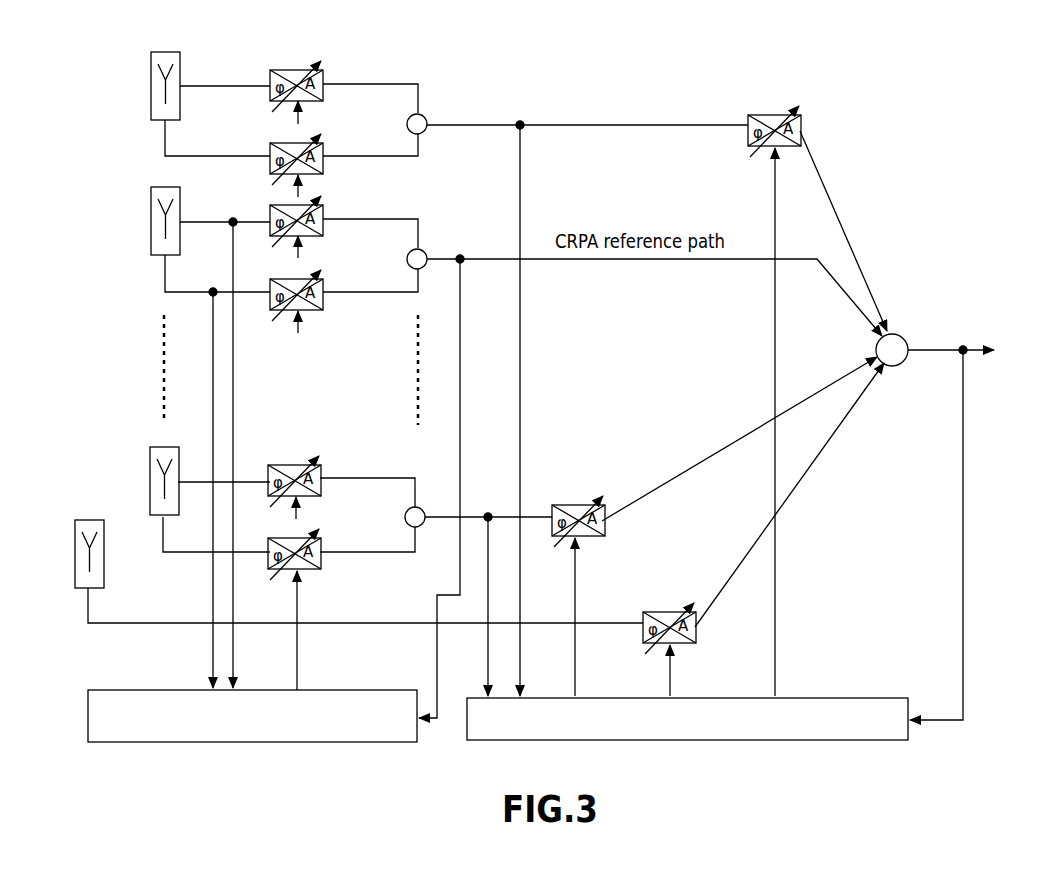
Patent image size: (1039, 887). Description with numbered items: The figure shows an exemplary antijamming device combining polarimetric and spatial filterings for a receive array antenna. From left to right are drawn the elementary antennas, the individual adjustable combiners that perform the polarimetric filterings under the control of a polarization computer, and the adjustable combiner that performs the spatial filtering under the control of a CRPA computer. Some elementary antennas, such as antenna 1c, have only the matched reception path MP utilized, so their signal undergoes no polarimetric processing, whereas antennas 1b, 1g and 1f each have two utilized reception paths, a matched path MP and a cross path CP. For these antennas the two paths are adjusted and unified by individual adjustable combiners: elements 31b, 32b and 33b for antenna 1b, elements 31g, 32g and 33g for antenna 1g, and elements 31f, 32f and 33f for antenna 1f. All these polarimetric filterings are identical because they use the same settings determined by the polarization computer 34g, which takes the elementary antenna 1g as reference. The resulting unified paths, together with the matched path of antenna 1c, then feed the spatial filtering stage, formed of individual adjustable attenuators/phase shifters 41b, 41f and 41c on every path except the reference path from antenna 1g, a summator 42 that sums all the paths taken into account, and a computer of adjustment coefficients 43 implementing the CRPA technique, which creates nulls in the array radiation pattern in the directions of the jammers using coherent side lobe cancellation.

The elementary antenna 1b is at (151, 80).
The elementary antenna 1g is at (151, 222).
The elementary antenna 1f is at (150, 454).
The elementary antenna 1c is at (92, 520).
The individual adjustable combiner 31b is at (288, 70).
The individual adjustable combiner 32b is at (324, 150).
The individual adjustable combiner 31g is at (270, 214).
The individual adjustable combiner 32g is at (324, 288).
The individual adjustable combiner 31f is at (286, 465).
The individual adjustable combiner 32f is at (322, 547).
The individual adjustable combiner 33b is at (425, 117).
The individual adjustable combiner 33g is at (425, 252).
The individual adjustable combiner 33f is at (421, 507).
The polarization computer 34g is at (320, 690).
The individual adjustable attenuator/phase shifter 41b is at (753, 115).
The individual adjustable attenuator/phase shifter 41f is at (560, 505).
The individual adjustable attenuator/phase shifter 41c is at (655, 612).
The summator 42 is at (903, 340).
The computer of adjustment coefficients 43 is at (815, 698).